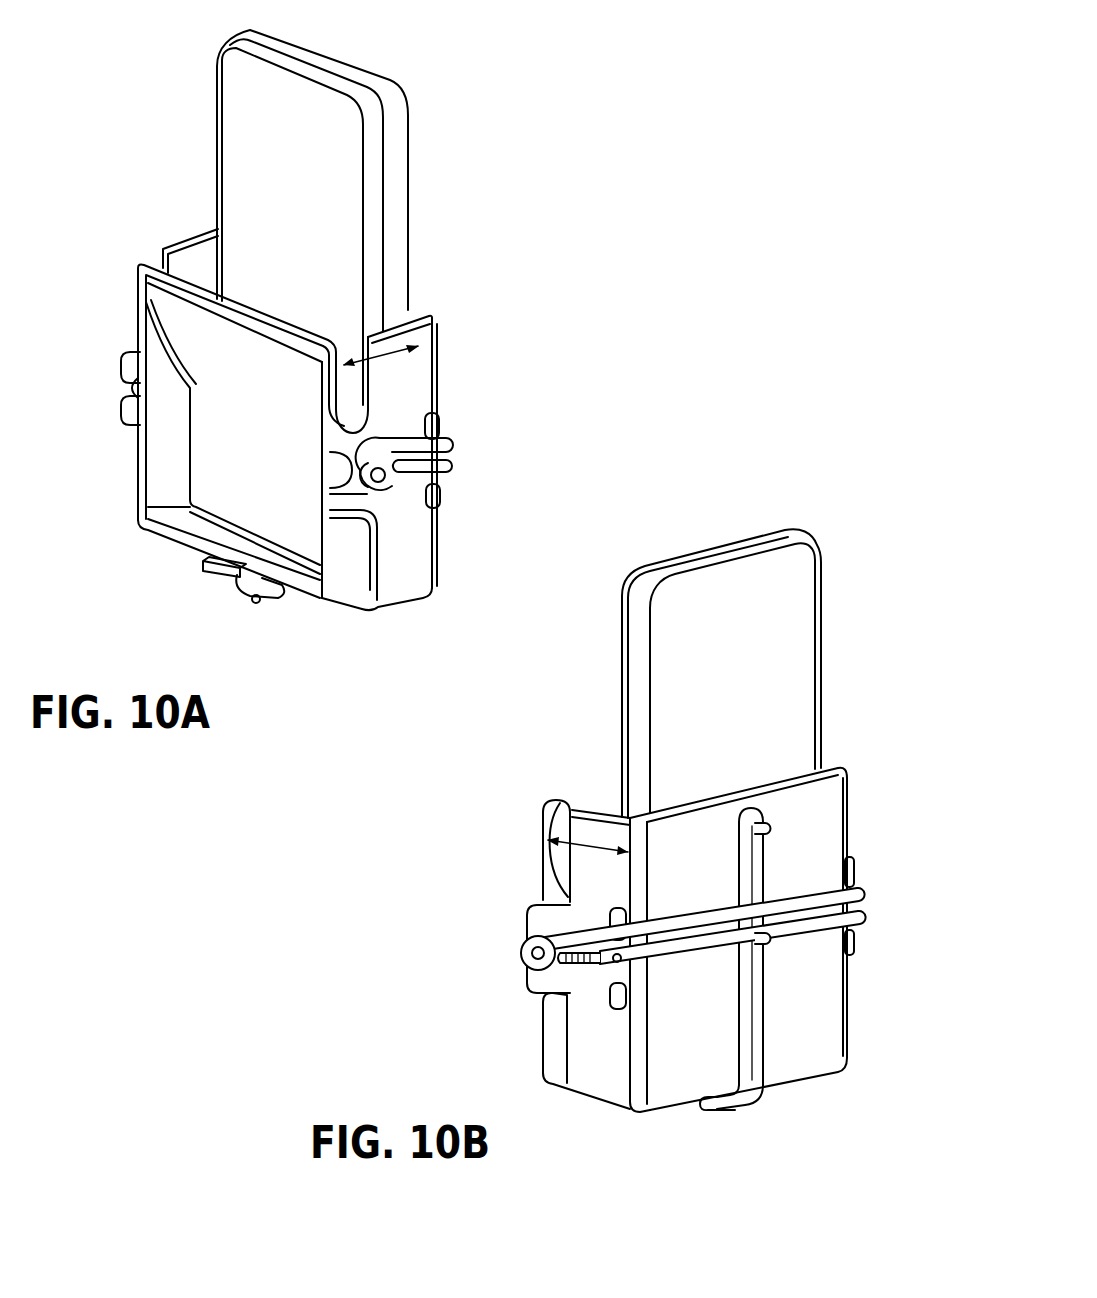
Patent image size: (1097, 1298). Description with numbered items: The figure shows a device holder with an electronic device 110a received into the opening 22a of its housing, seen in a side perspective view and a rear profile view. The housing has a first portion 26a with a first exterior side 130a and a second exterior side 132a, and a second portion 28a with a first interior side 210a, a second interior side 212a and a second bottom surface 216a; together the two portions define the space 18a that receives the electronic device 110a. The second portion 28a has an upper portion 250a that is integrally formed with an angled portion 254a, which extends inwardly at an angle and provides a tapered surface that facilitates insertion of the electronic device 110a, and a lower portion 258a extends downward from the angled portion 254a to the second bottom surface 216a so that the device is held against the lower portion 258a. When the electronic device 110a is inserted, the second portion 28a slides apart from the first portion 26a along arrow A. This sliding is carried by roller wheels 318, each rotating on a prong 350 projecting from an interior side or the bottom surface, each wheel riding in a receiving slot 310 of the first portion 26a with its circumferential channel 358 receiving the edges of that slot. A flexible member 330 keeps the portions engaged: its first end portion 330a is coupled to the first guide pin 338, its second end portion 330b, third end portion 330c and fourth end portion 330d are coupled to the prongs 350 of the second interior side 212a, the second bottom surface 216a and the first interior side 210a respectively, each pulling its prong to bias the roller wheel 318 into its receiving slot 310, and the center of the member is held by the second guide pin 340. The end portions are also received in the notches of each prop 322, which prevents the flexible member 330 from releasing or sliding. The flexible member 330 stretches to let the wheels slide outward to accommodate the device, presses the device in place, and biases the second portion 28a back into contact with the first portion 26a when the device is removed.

In FIG. 10A, the electronic device 110a is at (392, 100).
In FIG. 10B, the electronic device 110a is at (783, 593).
In FIG. 10A, the first exterior side 130a is at (187, 258).
In FIG. 10B, the first exterior side 130a is at (852, 760).
In FIG. 10A, the second portion 28a is at (178, 302).
In FIG. 10B, the second portion 28a is at (598, 800).
In FIG. 10A, the opening 22a is at (202, 253).
In FIG. 10B, the opening 22a is at (614, 786).
In FIG. 10A, the upper portion 250a is at (183, 304).
In FIG. 10B, the upper portion 250a is at (553, 827).
In FIG. 10A, the angled portion 254a is at (195, 345).
In FIG. 10B, the angled portion 254a is at (560, 890).
In FIG. 10A, the receiving slot 310 is at (126, 390).
In FIG. 10B, the receiving slot 310 is at (520, 946).
In FIG. 10A, the first interior side 210a is at (158, 462).
In FIG. 10A, the lower portion 258a is at (240, 480).
In FIG. 10A, the second bottom surface 216a is at (187, 543).
In FIG. 10A, the third end portion 330c is at (243, 602).
In FIG. 10B, the third end portion 330c is at (757, 1095).
In FIG. 10A, the prong 350 is at (425, 478).
In FIG. 10B, the prong 350 is at (532, 955).
In FIG. 10A, the second interior side 212a is at (347, 567).
In FIG. 10B, the second interior side 212a is at (558, 1058).
In FIG. 10A, the second end portion 330b is at (385, 478).
In FIG. 10B, the second end portion 330b is at (547, 967).
In FIG. 10A, the flexible member 330 is at (458, 465).
In FIG. 10B, the flexible member 330 is at (875, 893).
In FIG. 10A, the roller wheel 318 is at (360, 455).
In FIG. 10B, the roller wheel 318 is at (570, 960).
In FIG. 10A, the circumferential channel 358 is at (353, 422).
In FIG. 10B, the circumferential channel 358 is at (540, 905).
In FIG. 10A, the second exterior side 132a is at (400, 363).
In FIG. 10B, the second exterior side 132a is at (613, 1083).
In FIG. 10A, the first portion 26a is at (425, 333).
In FIG. 10B, the first portion 26a is at (807, 1017).
In FIG. 10A, the space 18a is at (421, 302).
In FIG. 10B, the space 18a is at (829, 756).
In FIG. 10A, the arrow A is at (393, 345).
In FIG. 10B, the arrow A is at (583, 838).
In FIG. 10B, the first end portion 330a is at (768, 812).
In FIG. 10B, the first guide pin 338 is at (770, 830).
In FIG. 10B, the prop 322 is at (613, 1007).
In FIG. 10B, the fourth end portion 330d is at (867, 918).
In FIG. 10B, the second guide pin 340 is at (770, 941).